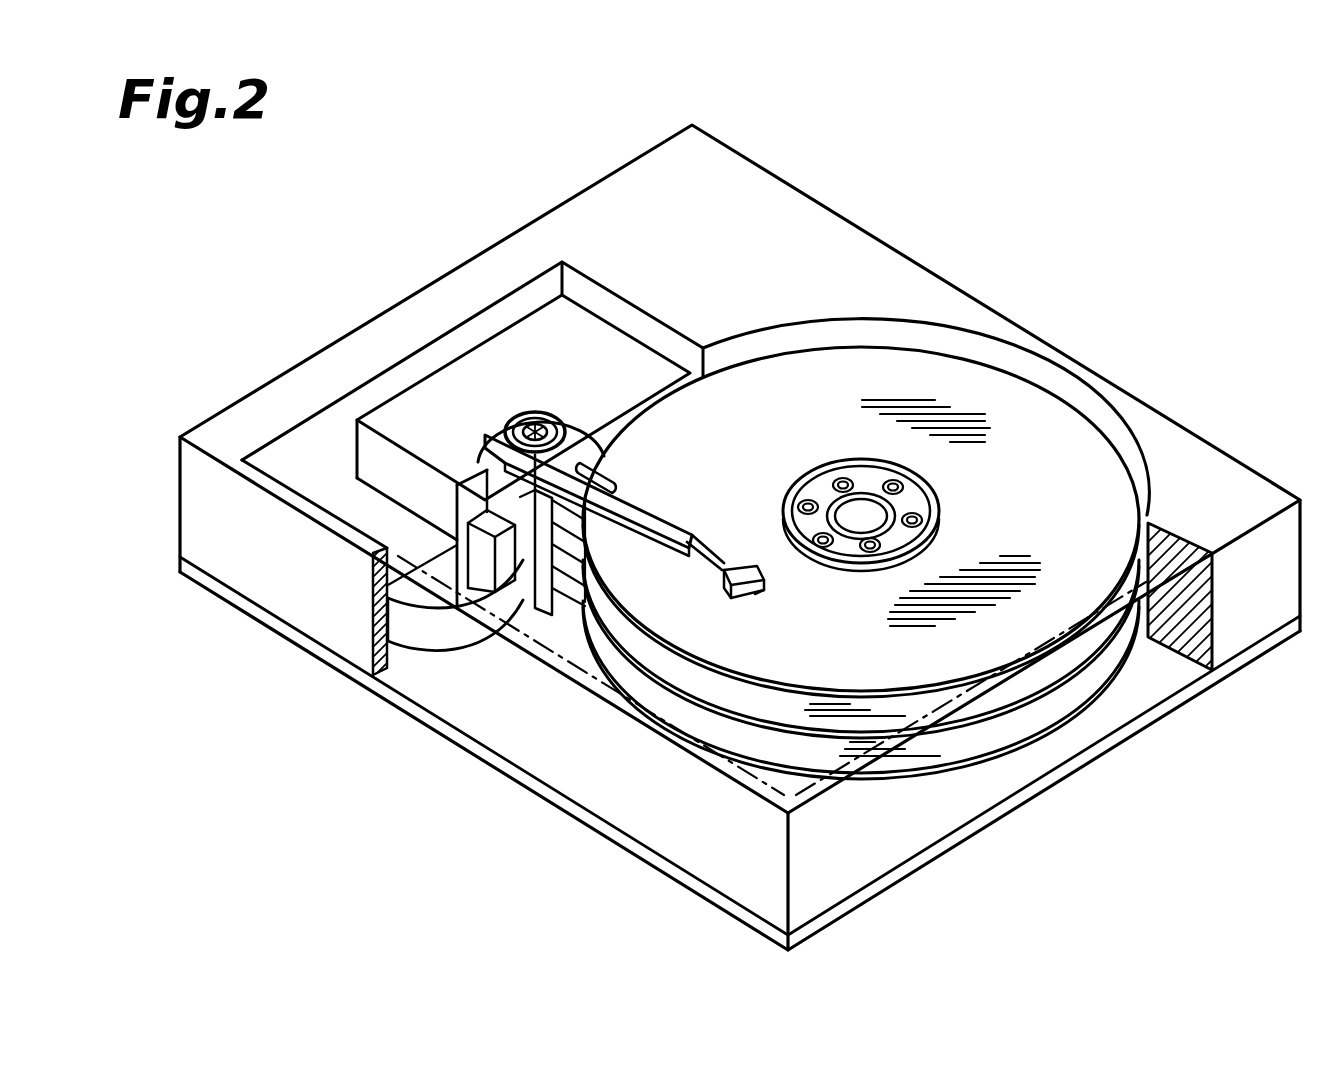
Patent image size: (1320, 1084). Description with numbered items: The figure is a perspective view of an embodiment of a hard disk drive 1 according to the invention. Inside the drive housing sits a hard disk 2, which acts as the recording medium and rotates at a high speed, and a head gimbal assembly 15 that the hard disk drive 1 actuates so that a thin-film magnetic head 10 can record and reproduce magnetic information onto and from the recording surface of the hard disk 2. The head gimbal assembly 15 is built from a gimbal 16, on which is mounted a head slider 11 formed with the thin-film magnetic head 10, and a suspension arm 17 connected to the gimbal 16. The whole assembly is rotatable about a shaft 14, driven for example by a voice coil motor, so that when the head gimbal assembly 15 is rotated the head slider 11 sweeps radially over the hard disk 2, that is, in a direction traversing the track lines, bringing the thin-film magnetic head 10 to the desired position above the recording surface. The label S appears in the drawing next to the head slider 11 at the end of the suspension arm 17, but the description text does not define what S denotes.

The hard disk drive 1 is at (994, 236).
The hard disk 2 is at (1000, 412).
The thin-film magnetic head 10 is at (755, 568).
The head slider 11 is at (728, 590).
The shaft 14 is at (538, 417).
The head gimbal assembly 15 is at (684, 496).
The gimbal 16 is at (701, 558).
The suspension arm 17 is at (635, 513).
The slider surface S is at (768, 590).